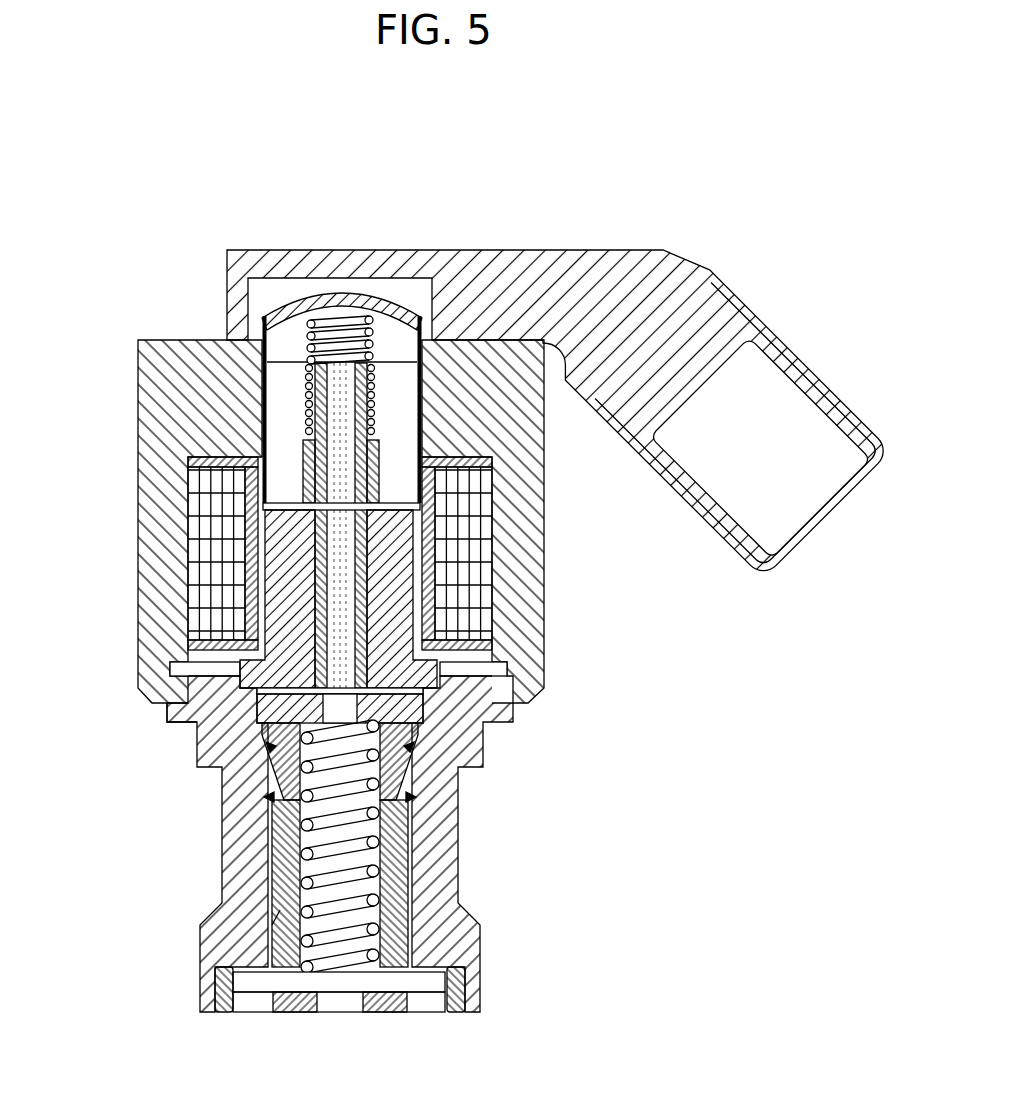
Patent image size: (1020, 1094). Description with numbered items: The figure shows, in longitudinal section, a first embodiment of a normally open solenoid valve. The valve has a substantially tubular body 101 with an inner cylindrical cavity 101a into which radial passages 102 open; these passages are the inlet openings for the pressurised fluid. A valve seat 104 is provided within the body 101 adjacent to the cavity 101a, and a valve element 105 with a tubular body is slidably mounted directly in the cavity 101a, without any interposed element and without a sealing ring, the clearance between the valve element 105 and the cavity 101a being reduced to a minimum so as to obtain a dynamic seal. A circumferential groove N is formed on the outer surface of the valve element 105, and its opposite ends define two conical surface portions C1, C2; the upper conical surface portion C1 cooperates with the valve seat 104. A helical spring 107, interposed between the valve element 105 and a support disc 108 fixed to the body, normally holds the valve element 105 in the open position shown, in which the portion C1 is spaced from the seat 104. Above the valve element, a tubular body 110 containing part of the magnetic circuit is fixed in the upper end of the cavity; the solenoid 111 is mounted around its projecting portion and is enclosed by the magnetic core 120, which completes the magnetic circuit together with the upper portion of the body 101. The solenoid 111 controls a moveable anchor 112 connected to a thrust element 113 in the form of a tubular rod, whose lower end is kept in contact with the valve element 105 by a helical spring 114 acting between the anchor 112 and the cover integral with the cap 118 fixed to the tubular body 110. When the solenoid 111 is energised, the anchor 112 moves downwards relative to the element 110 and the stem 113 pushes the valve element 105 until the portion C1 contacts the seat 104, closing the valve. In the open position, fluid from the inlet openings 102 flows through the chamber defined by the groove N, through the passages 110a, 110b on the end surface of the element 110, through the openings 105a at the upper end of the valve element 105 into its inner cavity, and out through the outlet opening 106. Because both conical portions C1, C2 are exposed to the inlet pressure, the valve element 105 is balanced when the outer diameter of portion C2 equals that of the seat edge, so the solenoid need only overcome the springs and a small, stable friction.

The tubular body 101 is at (465, 935).
The inner cavity 101a is at (290, 917).
The radial passages 102 is at (233, 787).
The valve seat 104 is at (507, 660).
The valve element 105 is at (405, 898).
The openings 105a is at (395, 697).
The outlet opening 106 is at (420, 1000).
The helical spring 107 is at (327, 962).
The support disc 108 is at (223, 1010).
The tubular body 110 is at (400, 600).
The passage 110a is at (210, 730).
The passage 110b is at (247, 653).
The solenoid 111 is at (203, 512).
The moveable anchor 112 is at (283, 433).
The thrust element 113 is at (297, 470).
The helical spring 114 is at (258, 335).
The cap 118 is at (350, 292).
The magnetic core 120 is at (533, 443).
The upper conical surface portion C1 is at (270, 745).
The lower conical surface portion C2 is at (268, 797).
The circumferential groove N is at (440, 797).